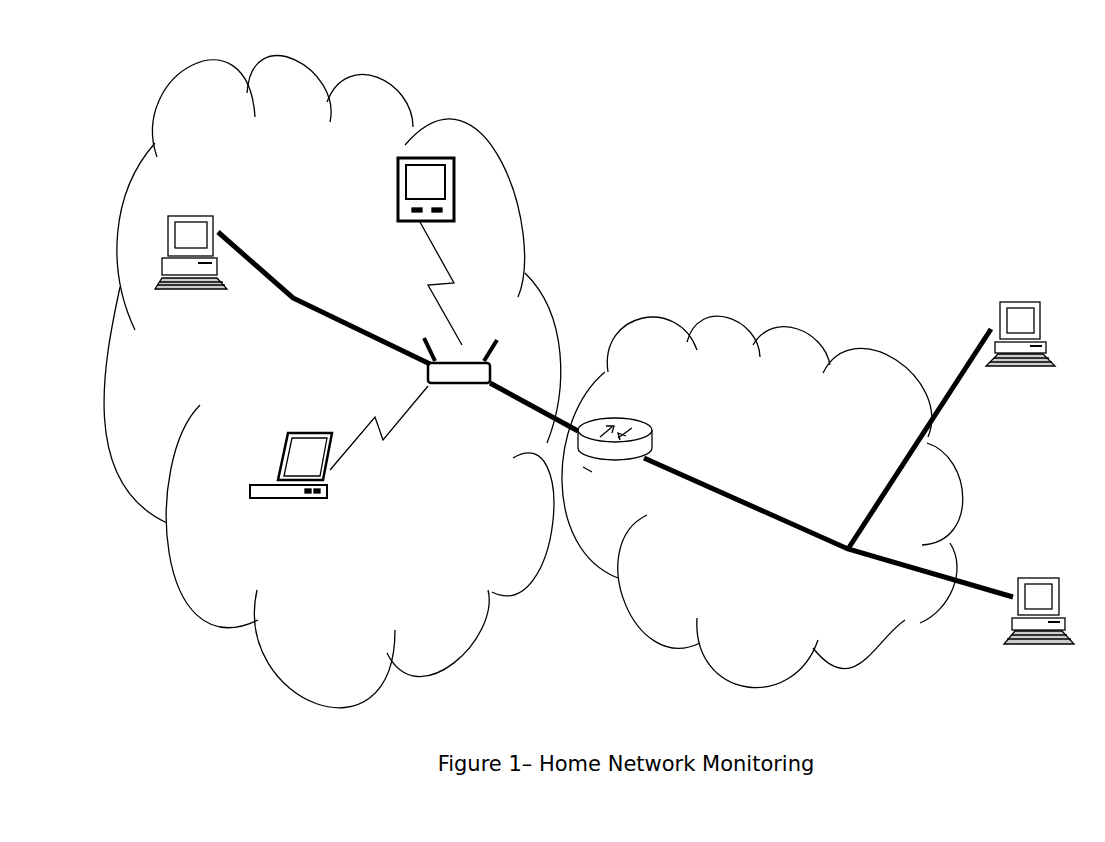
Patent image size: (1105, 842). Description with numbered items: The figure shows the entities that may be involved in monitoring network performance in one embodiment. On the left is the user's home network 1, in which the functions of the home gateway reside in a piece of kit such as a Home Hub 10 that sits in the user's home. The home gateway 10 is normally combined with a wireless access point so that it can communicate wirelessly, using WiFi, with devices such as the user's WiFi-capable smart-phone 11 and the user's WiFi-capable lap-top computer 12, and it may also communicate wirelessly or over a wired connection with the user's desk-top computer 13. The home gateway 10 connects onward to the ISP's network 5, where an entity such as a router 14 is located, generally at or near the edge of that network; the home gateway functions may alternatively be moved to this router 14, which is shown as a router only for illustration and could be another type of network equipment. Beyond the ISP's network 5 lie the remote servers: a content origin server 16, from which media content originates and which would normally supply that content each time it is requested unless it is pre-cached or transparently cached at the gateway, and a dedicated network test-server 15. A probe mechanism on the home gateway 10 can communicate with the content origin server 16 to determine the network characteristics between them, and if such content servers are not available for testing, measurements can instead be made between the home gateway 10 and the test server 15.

The user's home network 1 is at (516, 183).
The ISP's network 5 is at (730, 310).
The home gateway 10 is at (431, 339).
The user's smart-phone 11 is at (433, 154).
The user's lap-top computer 12 is at (279, 457).
The user's desk-top computer 13 is at (177, 210).
The router 14 is at (650, 418).
The dedicated test server 15 is at (1016, 294).
The content origin server 16 is at (1032, 570).